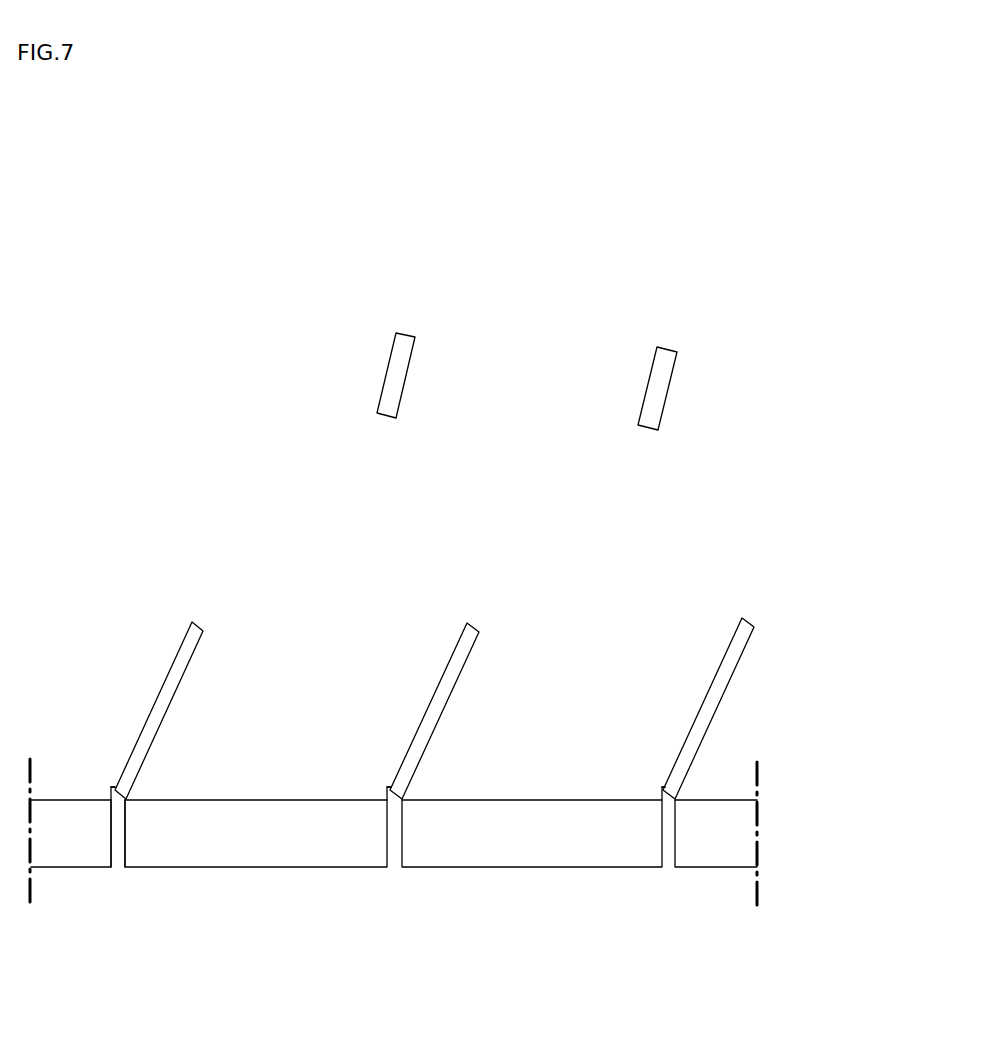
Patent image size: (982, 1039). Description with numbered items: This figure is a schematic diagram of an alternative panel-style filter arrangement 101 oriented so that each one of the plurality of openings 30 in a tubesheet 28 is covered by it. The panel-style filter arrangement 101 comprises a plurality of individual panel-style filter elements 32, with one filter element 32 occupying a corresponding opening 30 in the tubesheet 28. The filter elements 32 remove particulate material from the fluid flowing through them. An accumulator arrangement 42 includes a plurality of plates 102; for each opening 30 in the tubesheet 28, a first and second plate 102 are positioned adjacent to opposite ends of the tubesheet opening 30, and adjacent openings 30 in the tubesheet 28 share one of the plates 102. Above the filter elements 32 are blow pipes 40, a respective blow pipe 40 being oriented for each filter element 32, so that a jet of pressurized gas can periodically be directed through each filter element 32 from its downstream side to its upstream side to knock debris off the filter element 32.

The panel-style filter arrangement 101 is at (393, 897).
The filter element 32 is at (79, 855).
The tubesheet 28 is at (120, 802).
The opening 30 is at (126, 799).
The accumulator arrangement 42 is at (450, 681).
The plate 102 is at (185, 675).
The blow pipe 40 is at (408, 373).